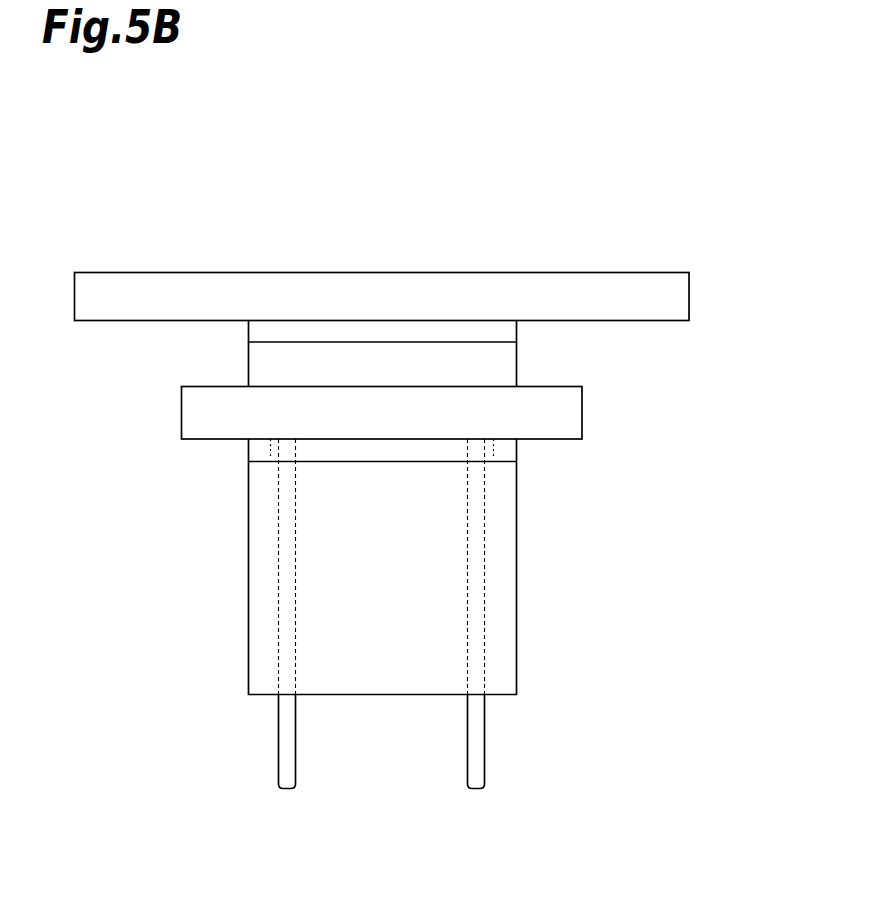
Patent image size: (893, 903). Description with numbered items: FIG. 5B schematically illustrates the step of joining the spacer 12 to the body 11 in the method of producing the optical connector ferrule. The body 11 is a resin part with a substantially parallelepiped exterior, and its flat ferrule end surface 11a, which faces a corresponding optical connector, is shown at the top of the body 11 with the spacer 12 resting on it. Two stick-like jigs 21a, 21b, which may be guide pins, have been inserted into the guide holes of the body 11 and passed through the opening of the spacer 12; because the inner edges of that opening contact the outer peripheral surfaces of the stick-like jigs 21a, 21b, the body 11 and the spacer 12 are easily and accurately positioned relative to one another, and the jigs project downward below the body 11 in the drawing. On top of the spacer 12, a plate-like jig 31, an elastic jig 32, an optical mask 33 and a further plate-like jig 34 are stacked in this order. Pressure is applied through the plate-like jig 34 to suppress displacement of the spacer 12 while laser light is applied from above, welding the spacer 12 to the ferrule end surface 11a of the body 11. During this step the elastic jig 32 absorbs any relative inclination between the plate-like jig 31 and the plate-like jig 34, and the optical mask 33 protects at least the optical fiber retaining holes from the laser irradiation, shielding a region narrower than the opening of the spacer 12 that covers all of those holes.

The body 11 is at (516, 540).
The ferrule end surface 11a is at (371, 461).
The spacer 12 is at (516, 452).
The stick-like jig 21a is at (285, 762).
The stick-like jig 21b is at (484, 757).
The plate-like jig 31 is at (582, 413).
The elastic jig 32 is at (516, 372).
The optical mask 33 is at (516, 332).
The plate-like jig 34 is at (690, 293).